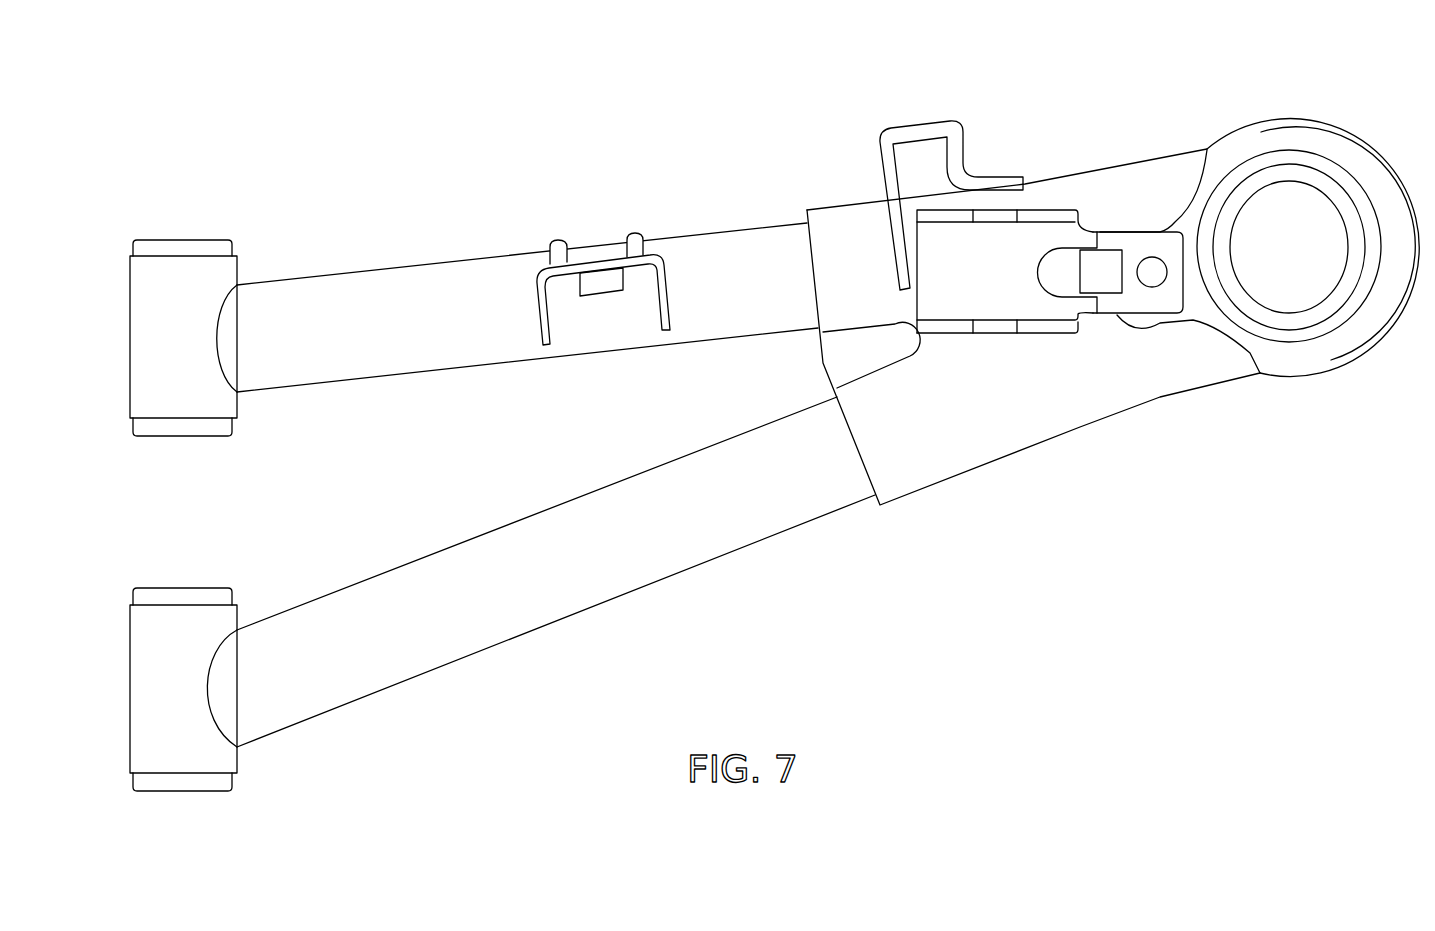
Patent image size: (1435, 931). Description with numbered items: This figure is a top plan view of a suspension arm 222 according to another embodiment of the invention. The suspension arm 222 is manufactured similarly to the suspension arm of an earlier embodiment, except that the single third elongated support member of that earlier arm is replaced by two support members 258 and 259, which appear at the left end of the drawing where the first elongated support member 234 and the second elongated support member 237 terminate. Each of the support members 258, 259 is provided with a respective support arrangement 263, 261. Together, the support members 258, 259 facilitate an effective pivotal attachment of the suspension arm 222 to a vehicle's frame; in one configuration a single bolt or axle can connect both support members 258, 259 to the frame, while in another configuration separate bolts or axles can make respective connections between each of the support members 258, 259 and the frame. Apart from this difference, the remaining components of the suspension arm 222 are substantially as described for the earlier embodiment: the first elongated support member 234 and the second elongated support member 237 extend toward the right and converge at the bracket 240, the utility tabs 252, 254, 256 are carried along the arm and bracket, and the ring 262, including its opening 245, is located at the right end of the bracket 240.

The suspension arm 222 is at (270, 151).
The first elongated support member 234 is at (453, 238).
The second elongated support member 237 is at (480, 682).
The bracket 240 is at (1017, 122).
The opening 245 is at (1328, 177).
The utility tab 252 is at (652, 262).
The utility tab 254 is at (1048, 238).
The utility tab 256 is at (915, 135).
The support member 258 is at (121, 341).
The support member 259 is at (121, 687).
The support arrangement 261 is at (213, 790).
The ring 262 is at (1276, 170).
The support arrangement 263 is at (213, 434).